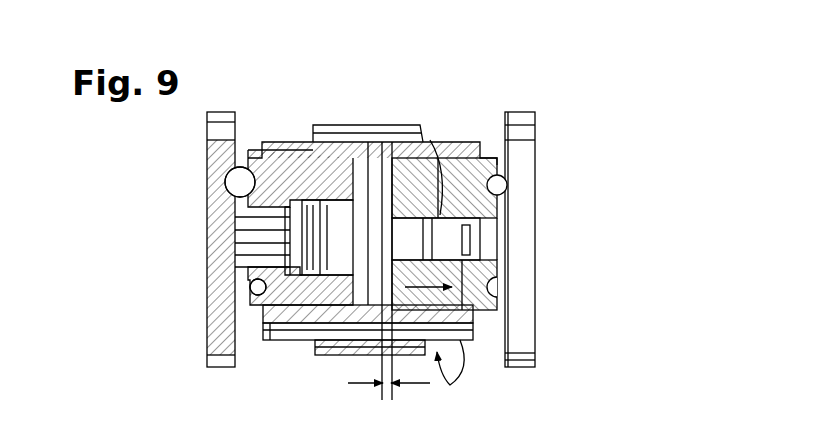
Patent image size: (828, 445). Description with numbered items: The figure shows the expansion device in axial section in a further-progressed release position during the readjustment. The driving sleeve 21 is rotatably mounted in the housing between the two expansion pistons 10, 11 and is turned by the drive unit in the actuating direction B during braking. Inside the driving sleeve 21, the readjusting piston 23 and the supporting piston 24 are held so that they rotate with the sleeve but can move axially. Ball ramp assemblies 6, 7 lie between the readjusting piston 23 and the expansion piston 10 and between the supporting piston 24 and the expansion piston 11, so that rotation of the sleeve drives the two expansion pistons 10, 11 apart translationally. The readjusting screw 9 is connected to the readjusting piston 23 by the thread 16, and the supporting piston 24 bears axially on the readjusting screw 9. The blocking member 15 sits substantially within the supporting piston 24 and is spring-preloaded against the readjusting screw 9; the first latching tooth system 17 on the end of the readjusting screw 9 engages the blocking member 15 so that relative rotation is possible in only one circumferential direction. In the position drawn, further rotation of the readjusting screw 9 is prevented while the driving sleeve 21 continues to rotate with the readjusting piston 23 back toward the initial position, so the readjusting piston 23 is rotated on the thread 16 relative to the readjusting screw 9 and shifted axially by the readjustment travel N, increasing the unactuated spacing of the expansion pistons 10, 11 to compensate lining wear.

The ball ramp assembly 6 is at (496, 174).
The ball ramp assembly 7 is at (240, 166).
The readjusting screw 9 is at (360, 290).
The expansion piston 10 is at (525, 210).
The expansion piston 11 is at (216, 305).
The blocking member 15 is at (336, 243).
The thread 16 is at (400, 160).
The first latching tooth system 17 is at (272, 338).
The driving sleeve 21 is at (355, 172).
The readjusting piston 23 is at (450, 140).
The supporting piston 24 is at (297, 170).
The readjustment travel N is at (392, 395).
The actuating direction B is at (455, 358).